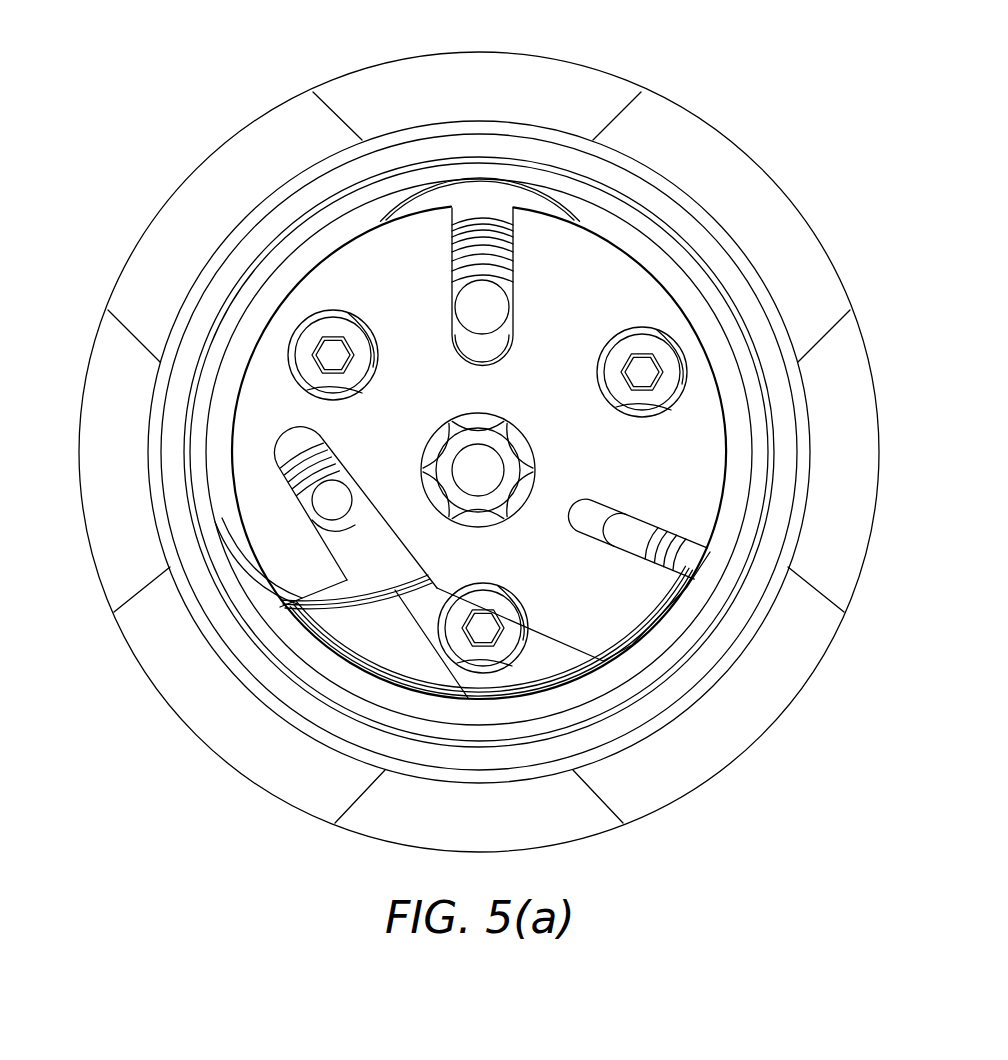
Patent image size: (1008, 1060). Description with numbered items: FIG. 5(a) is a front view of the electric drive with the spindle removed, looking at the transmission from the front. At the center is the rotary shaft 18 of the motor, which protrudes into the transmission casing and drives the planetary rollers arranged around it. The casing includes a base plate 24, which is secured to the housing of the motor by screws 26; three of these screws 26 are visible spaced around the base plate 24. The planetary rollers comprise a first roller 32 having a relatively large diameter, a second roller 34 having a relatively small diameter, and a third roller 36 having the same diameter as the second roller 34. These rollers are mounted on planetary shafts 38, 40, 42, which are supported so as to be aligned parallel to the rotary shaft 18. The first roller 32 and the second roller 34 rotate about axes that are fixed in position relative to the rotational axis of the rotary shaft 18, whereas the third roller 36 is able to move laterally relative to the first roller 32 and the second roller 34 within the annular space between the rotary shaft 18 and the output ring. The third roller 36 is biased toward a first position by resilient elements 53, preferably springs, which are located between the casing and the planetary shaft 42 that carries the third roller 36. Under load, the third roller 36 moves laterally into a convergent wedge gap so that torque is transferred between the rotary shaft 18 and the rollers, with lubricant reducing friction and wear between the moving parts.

The rotary shaft 18 is at (488, 458).
The base plate 24 is at (762, 186).
The screws 26 is at (342, 328).
The first roller 32 is at (480, 197).
The second roller 34 is at (703, 577).
The third roller 36 is at (240, 530).
The planetary shaft 38 is at (492, 310).
The planetary shaft 40 is at (620, 525).
The planetary shaft 42 is at (335, 495).
The resilient elements 53 is at (317, 437).